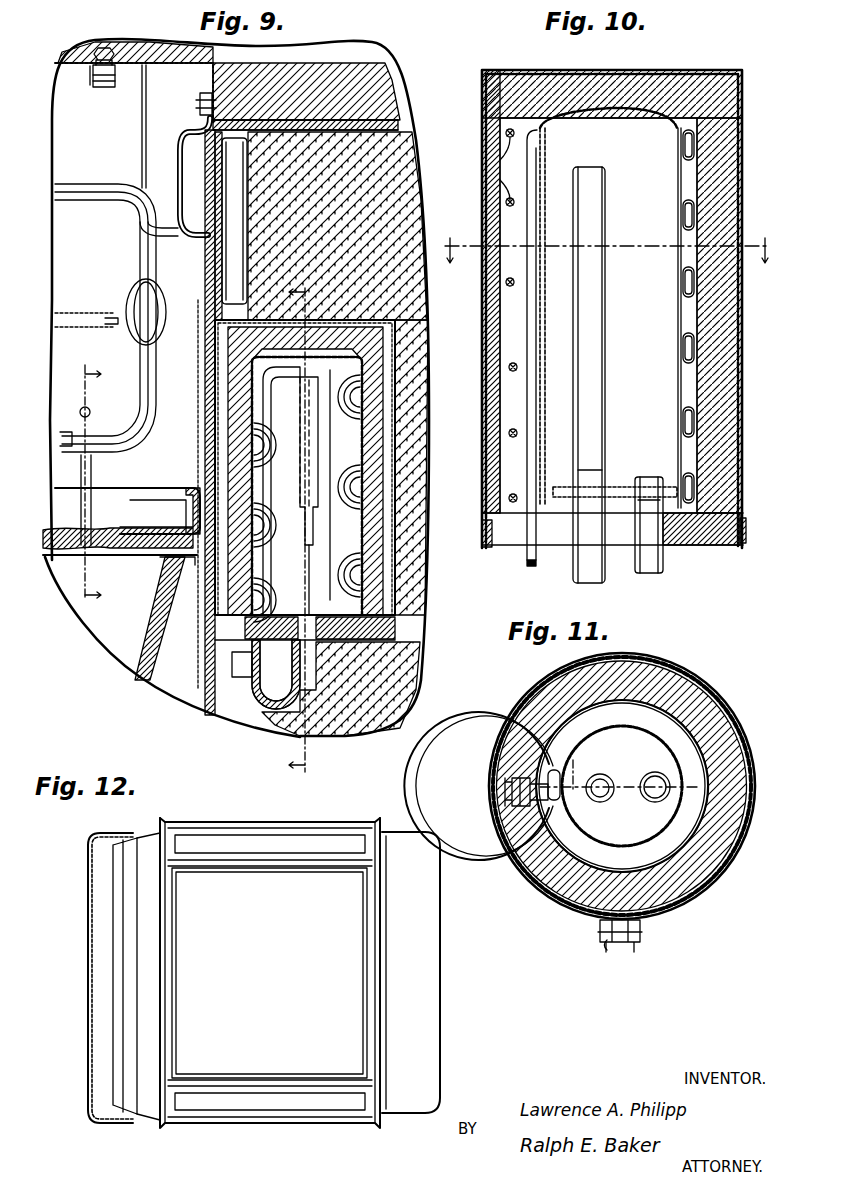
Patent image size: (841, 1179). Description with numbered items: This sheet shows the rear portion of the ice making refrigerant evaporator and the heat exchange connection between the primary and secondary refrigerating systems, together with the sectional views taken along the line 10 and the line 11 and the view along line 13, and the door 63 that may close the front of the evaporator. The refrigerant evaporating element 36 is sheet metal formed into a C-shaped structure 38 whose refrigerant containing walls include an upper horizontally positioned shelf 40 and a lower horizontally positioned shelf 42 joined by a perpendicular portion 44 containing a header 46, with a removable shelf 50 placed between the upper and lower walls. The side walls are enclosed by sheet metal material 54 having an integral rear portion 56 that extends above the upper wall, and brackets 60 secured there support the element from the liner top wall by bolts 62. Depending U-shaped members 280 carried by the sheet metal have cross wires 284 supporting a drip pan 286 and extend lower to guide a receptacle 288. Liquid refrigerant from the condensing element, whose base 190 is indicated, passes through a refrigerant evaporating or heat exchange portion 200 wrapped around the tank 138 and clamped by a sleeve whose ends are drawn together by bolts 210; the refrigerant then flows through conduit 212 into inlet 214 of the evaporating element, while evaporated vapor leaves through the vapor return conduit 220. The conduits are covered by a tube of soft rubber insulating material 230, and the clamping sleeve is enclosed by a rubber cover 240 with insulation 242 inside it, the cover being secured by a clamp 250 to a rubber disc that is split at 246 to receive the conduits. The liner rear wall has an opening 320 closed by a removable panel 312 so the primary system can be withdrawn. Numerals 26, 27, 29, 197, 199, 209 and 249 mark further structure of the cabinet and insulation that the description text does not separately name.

In FIG. 9, the section line 10- 10 is at (283, 528).
In FIG. 10, the section line 11- 11 is at (612, 262).
In FIG. 9, the section line 13- 13 is at (105, 484).
In FIG. 9, the top wall insulation 26 is at (375, 78).
In FIG. 9, the outer cabinet shell 27 is at (75, 46).
In FIG. 9, the cabinet bottom wall 29 is at (222, 708).
In FIG. 9, the refrigerant evaporating element 36 is at (66, 206).
In FIG. 9, the C-shaped structure 38 is at (138, 354).
In FIG. 9, the upper horizontally positioned shelf 40 is at (62, 190).
In FIG. 9, the lower horizontally positioned shelf 42 is at (62, 440).
In FIG. 9, the perpendicular portion 44 is at (158, 364).
In FIG. 9, the header 46 is at (156, 306).
In FIG. 9, the removable shelf 50 is at (76, 312).
In FIG. 9, the sheet metal material 54 is at (62, 137).
In FIG. 9, the rear portion 56 is at (142, 152).
In FIG. 9, the brackets 60 is at (110, 87).
In FIG. 9, the bolts 62 is at (92, 84).
In FIG. 12, the door 63 is at (88, 905).
In FIG. 9, the tank 138 is at (332, 432).
In FIG. 10, the tank 138 is at (604, 70).
In FIG. 11, the tank 138 is at (668, 716).
In FIG. 10, the base 190 is at (662, 562).
In FIG. 11, the base 190 is at (655, 772).
In FIG. 9, the insulation 197 is at (338, 748).
In FIG. 10, the insulation 197 is at (535, 472).
In FIG. 9, the heater tube 199 is at (320, 583).
In FIG. 10, the heater tube 199 is at (589, 375).
In FIG. 11, the heater tube 199 is at (600, 802).
In FIG. 9, the refrigerant evaporating or heat exchange portion 200 is at (322, 452).
In FIG. 10, the refrigerant evaporating or heat exchange portion 200 is at (706, 306).
In FIG. 11, the refrigerant evaporating or heat exchange portion 200 is at (686, 664).
In FIG. 9, the outer casing wall 209 is at (370, 480).
In FIG. 10, the outer casing wall 209 is at (700, 176).
In FIG. 11, the outer casing wall 209 is at (690, 860).
In FIG. 10, the bolts 210 is at (498, 180).
In FIG. 11, the bolts 210 is at (500, 800).
In FIG. 9, the conduit 212 is at (184, 130).
In FIG. 10, the conduit 212 is at (528, 562).
In FIG. 9, the inlet 214 is at (138, 226).
In FIG. 9, the vapor return conduit 220 is at (398, 125).
In FIG. 9, the tube of soft rubber insulating material 230 is at (240, 200).
In FIG. 9, the rubber enclosure 240 is at (392, 367).
In FIG. 10, the rubber enclosure 240 is at (736, 118).
In FIG. 11, the rubber enclosure 240 is at (742, 730).
In FIG. 9, the insulation 242 is at (345, 340).
In FIG. 10, the insulation 242 is at (718, 205).
In FIG. 11, the insulation 242 is at (732, 757).
In FIG. 10, the split 246 is at (566, 540).
In FIG. 11, the split 246 is at (584, 767).
In FIG. 9, the bottom insulation 249 is at (402, 650).
In FIG. 10, the bottom insulation 249 is at (716, 546).
In FIG. 9, the clamp 250 is at (396, 630).
In FIG. 10, the clamp 250 is at (745, 527).
In FIG. 11, the clamp 250 is at (686, 896).
In FIG. 9, the U-shaped members 280 is at (92, 476).
In FIG. 12, the U-shaped members 280 is at (370, 822).
In FIG. 9, the cross wires 284 is at (98, 549).
In FIG. 12, the cross wires 284 is at (372, 892).
In FIG. 9, the drip pan 286 is at (148, 500).
In FIG. 12, the drip pan 286 is at (425, 972).
In FIG. 9, the receptacle 288 is at (138, 682).
In FIG. 9, the removable panel 312 is at (206, 282).
In FIG. 9, the opening 320 is at (206, 94).